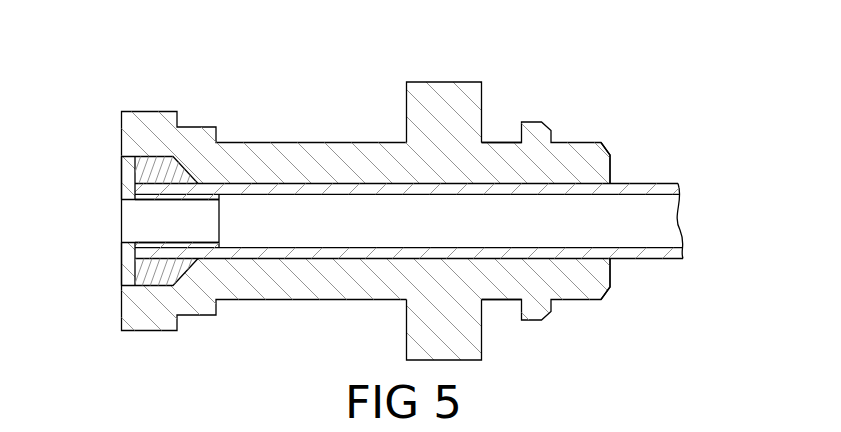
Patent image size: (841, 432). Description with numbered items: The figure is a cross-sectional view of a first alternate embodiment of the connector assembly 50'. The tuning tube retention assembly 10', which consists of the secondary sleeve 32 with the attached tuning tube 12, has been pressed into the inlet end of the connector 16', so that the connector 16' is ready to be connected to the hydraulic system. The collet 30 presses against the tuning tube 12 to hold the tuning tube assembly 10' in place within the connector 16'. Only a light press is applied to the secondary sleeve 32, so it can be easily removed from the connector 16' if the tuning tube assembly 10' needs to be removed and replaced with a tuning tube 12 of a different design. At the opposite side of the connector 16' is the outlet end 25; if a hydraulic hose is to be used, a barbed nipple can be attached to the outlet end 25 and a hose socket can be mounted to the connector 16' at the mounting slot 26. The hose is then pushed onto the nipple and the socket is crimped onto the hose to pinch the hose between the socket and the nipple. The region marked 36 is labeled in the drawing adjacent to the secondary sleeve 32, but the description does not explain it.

The connector assembly 50' is at (366, 165).
The tuning tube retention assembly 10' is at (420, 222).
The tuning tube 12 is at (657, 188).
The connector 16' is at (409, 221).
The outlet end 25 is at (624, 155).
The mounting slot 26 is at (502, 115).
The collet 30 is at (163, 277).
The secondary sleeve 32 is at (108, 180).
The thin wall portion 36 is at (130, 260).